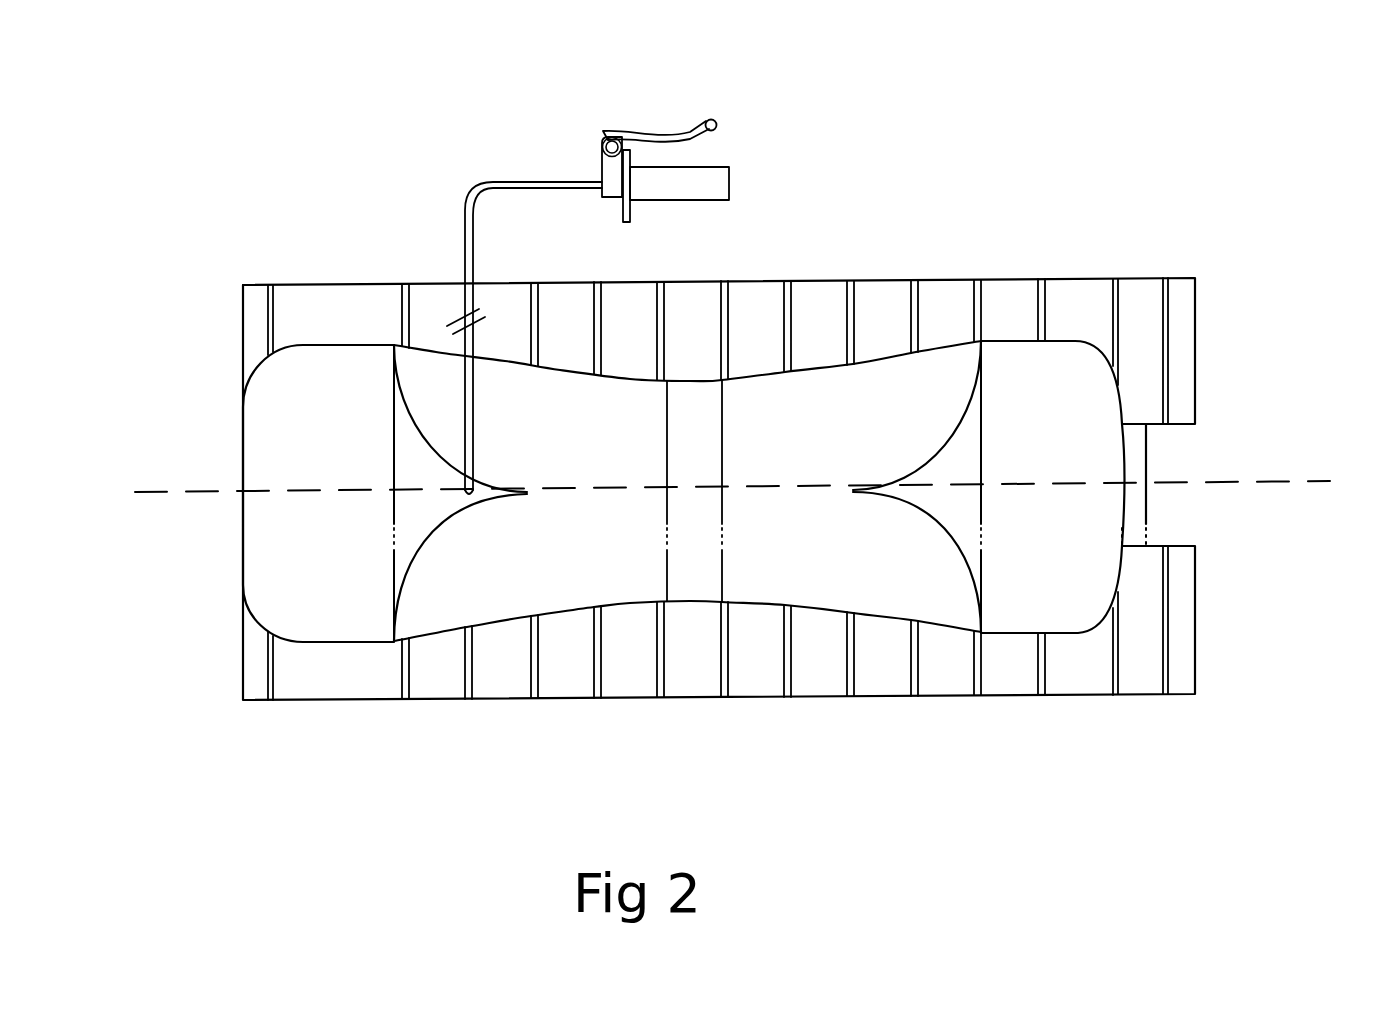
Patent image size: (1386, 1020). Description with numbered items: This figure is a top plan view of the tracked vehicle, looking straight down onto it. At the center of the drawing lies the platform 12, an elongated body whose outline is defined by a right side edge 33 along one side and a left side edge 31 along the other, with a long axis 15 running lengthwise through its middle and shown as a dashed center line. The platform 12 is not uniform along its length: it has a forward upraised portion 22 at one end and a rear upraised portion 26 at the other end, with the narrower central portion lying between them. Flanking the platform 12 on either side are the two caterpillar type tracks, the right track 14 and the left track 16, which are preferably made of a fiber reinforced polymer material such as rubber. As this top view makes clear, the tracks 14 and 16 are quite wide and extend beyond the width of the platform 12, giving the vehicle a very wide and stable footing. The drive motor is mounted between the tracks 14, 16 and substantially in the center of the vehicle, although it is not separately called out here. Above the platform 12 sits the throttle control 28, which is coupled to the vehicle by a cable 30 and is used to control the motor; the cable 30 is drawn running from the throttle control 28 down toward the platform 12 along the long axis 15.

The platform 12 is at (800, 400).
The right track 14 is at (1189, 628).
The long axis 15 is at (1237, 477).
The left track 16 is at (1188, 331).
The forward upraised portion 22 is at (1111, 409).
The rear upraised portion 26 is at (253, 412).
The throttle control 28 is at (687, 173).
The cable 30 is at (516, 186).
The left side edge 31 is at (620, 380).
The right side edge 33 is at (612, 607).